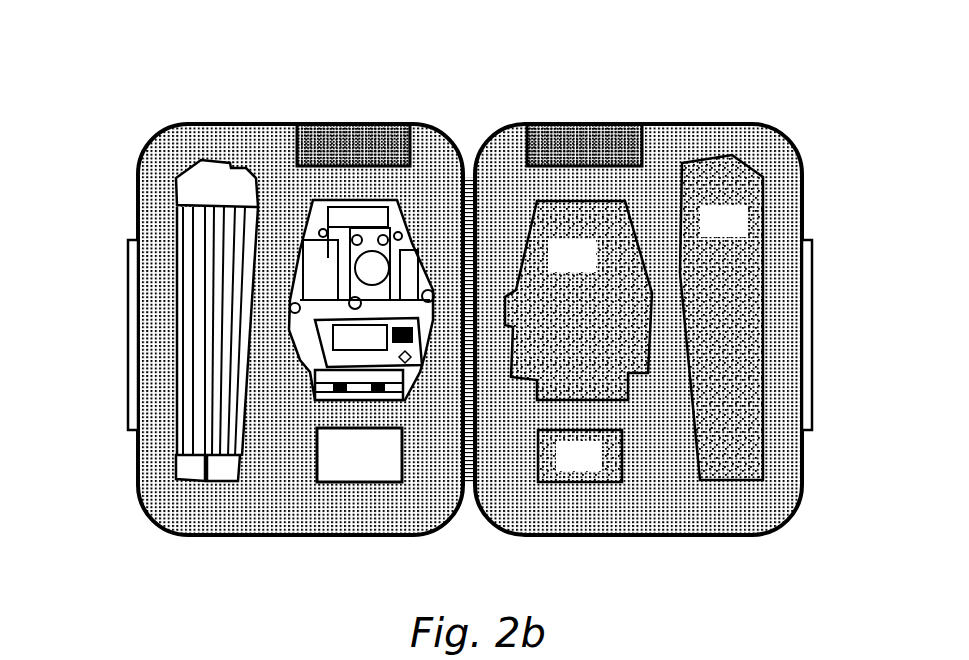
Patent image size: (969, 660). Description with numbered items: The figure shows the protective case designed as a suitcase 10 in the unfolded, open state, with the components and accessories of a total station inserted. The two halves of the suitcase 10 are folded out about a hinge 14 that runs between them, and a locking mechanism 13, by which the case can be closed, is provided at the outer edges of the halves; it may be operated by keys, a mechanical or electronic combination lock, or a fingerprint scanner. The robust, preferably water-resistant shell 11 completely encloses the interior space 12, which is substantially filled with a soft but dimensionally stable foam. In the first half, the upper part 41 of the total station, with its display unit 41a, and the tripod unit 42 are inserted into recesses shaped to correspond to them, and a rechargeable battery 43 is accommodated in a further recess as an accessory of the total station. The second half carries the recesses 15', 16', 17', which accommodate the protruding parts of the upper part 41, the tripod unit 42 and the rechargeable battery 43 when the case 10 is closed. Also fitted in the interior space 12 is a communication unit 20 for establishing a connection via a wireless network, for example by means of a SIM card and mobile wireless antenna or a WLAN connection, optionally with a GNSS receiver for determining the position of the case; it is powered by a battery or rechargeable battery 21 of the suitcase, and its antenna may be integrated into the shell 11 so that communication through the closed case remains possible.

The suitcase 10 is at (353, 282).
The shell 11 is at (644, 307).
The interior space 12 is at (667, 339).
The locking mechanism 13 is at (464, 330).
The hinge 14 is at (440, 371).
The recess 15' is at (578, 300).
The recess 16' is at (721, 317).
The recess 17' is at (580, 456).
The communication unit 20 is at (339, 127).
The rechargeable battery 21 is at (605, 124).
The upper part 41 is at (288, 241).
The display unit 41a is at (294, 459).
The tripod unit 42 is at (162, 295).
The rechargeable battery 43 is at (344, 501).